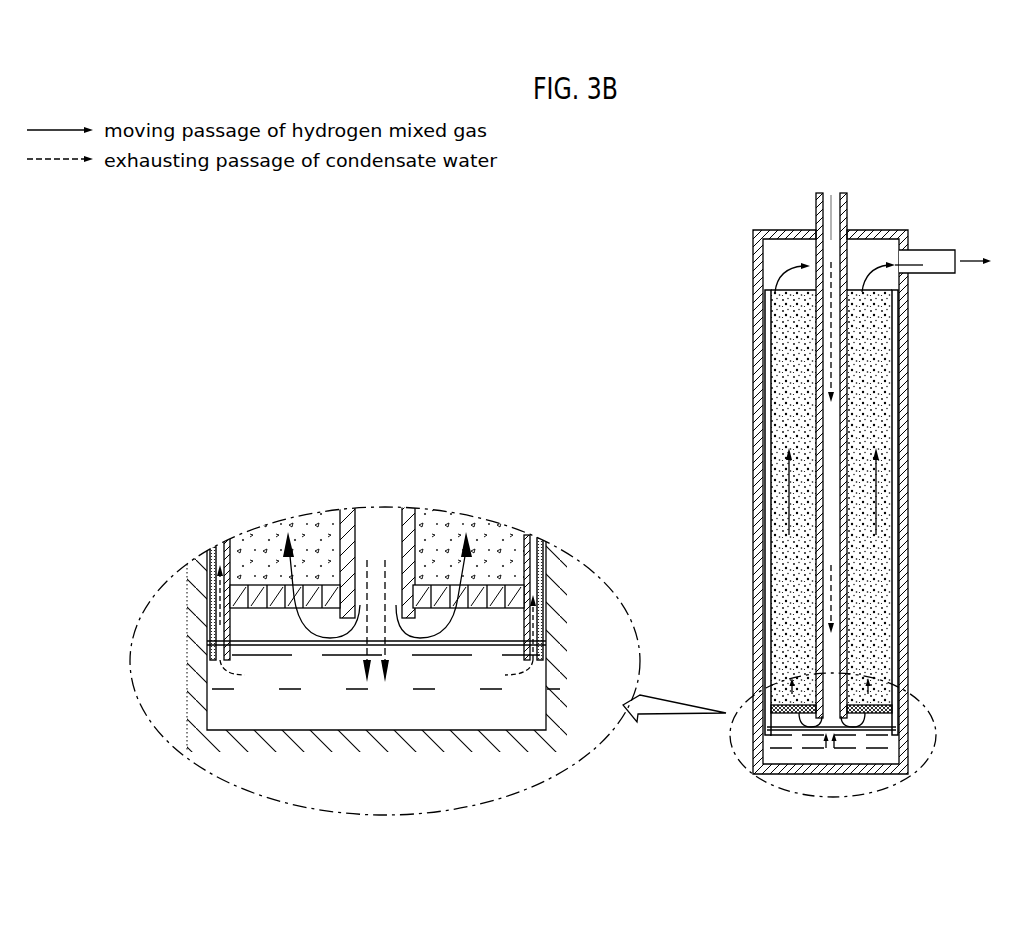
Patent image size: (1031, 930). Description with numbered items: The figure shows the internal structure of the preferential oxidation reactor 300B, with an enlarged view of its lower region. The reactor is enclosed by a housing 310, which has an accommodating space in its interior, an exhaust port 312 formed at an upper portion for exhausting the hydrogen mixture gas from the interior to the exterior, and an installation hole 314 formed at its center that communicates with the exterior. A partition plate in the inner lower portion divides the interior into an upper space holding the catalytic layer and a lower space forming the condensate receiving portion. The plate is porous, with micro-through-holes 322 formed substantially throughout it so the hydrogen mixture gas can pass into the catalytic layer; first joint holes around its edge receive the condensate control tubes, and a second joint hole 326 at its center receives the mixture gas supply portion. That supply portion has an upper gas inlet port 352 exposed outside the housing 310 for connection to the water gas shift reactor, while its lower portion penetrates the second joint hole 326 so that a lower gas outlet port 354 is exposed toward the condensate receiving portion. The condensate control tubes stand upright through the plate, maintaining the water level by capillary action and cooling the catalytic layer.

The preferential oxidation reactor 300B is at (935, 179).
The housing 310 is at (905, 338).
The exhaust port 312 is at (912, 254).
The installation hole 314 is at (822, 238).
The micro-through-holes 322 is at (513, 608).
The second joint hole 326 is at (330, 580).
The upper gas inlet port 352 is at (838, 198).
The lower gas outlet port 354 is at (840, 716).